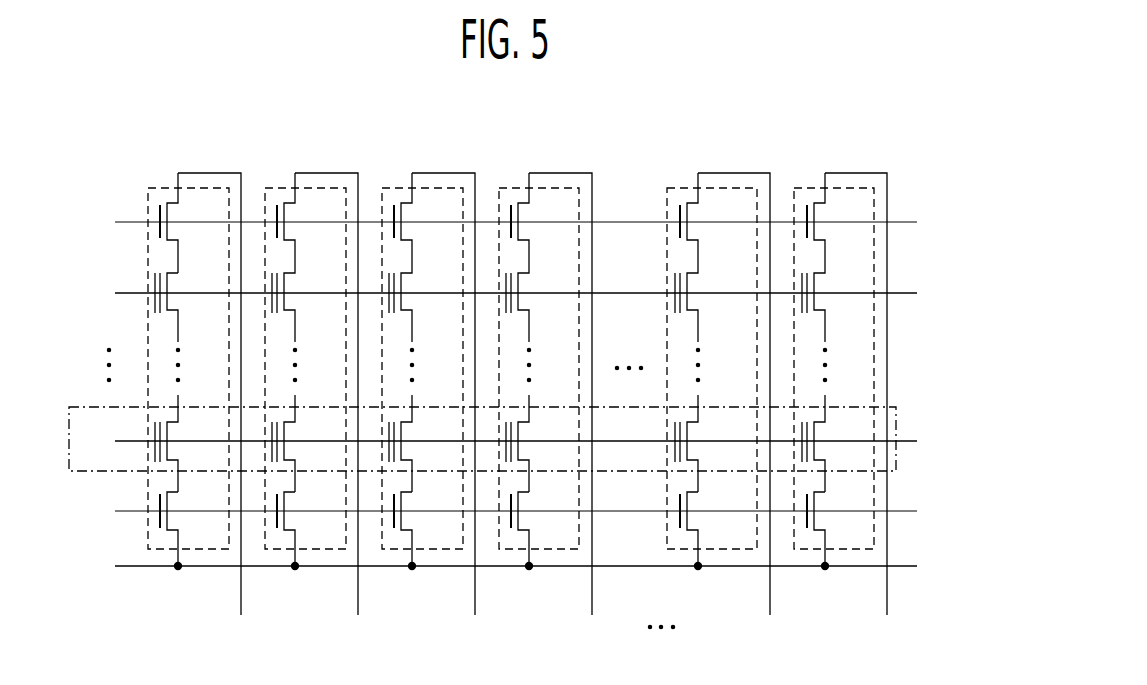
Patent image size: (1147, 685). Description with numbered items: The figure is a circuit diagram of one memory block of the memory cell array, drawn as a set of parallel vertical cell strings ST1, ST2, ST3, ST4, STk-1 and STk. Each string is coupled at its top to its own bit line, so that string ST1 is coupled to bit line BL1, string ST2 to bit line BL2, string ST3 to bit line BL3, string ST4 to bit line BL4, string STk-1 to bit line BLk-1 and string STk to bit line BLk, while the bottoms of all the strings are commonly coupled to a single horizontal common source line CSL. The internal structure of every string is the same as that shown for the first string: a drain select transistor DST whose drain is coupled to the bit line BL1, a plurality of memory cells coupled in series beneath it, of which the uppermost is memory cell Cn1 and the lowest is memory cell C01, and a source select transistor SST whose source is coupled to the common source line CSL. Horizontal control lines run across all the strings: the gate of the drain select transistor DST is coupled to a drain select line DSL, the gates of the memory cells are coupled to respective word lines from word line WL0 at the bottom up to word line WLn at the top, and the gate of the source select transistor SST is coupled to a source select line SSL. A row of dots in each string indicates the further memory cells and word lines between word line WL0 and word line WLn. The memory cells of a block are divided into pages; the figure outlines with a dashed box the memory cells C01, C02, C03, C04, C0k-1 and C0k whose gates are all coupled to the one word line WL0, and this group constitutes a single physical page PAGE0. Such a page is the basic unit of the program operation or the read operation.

The string ST1 is at (160, 188).
The string ST2 is at (277, 188).
The string ST3 is at (394, 188).
The string ST4 is at (511, 188).
The string STk-1 is at (680, 188).
The string STk is at (807, 188).
The drain select transistor DST is at (188, 223).
The source select transistor SST is at (187, 526).
The memory cell Cn1 is at (184, 304).
The memory cell C01 is at (184, 443).
The memory cell C02 is at (301, 443).
The memory cell C03 is at (418, 443).
The memory cell C04 is at (535, 443).
The memory cell C0k-1 is at (716, 443).
The memory cell C0k is at (832, 443).
The drain select line DSL is at (497, 223).
The word line WLn is at (497, 293).
The word line WL0 is at (497, 442).
The source select line SSL is at (497, 512).
The common source line CSL is at (497, 567).
The bit line BL1 is at (217, 410).
The bit line BL2 is at (335, 410).
The bit line BL3 is at (452, 410).
The bit line BL4 is at (568, 410).
The bit line BLk-1 is at (752, 410).
The bit line BLk is at (864, 410).
The physical page PAGE0 is at (896, 413).